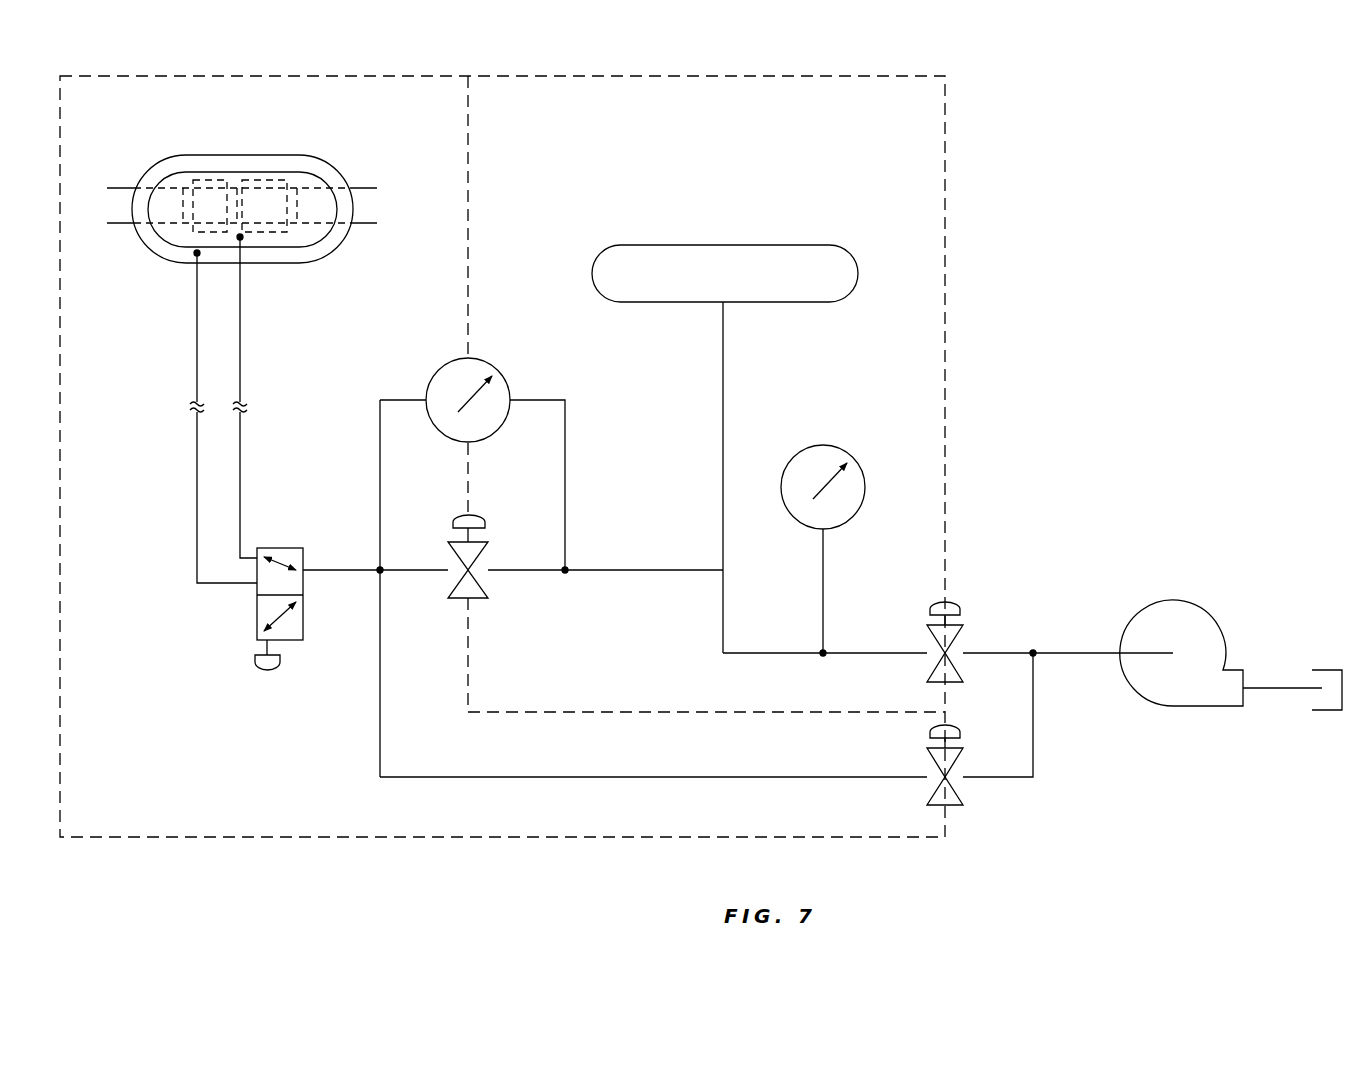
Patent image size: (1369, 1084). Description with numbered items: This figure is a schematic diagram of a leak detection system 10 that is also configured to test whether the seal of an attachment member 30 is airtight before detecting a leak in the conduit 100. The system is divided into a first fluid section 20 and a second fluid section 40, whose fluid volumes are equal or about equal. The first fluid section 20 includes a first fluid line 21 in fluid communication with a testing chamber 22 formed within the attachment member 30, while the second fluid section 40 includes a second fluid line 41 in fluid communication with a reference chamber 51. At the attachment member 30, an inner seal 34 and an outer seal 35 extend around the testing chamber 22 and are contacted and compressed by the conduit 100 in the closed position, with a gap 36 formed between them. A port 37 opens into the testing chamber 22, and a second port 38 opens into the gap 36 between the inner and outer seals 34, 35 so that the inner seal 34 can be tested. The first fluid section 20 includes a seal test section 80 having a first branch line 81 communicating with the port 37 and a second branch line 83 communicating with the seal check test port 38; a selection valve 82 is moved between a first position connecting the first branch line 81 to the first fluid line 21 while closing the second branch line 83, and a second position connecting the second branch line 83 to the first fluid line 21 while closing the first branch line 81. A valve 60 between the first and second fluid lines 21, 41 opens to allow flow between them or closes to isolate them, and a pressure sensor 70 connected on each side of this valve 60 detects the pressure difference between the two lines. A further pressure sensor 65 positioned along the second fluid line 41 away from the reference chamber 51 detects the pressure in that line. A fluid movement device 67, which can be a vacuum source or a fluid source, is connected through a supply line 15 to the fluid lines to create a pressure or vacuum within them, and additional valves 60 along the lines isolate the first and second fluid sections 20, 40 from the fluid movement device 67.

The leak detection system 10 is at (1000, 285).
The supply line 15 is at (1067, 652).
The first fluid section 20 is at (483, 800).
The first fluid line 21 is at (650, 778).
The testing chamber 22 is at (180, 182).
The attachment member 30 is at (147, 175).
The inner seal 34 is at (258, 172).
The outer seal 35 is at (342, 237).
The gap 36 is at (323, 246).
The port 37 is at (241, 240).
The second port 38 is at (196, 256).
The second fluid section 40 is at (908, 553).
The second fluid line 41 is at (873, 655).
The reference chamber 51 is at (778, 246).
The valve 60 is at (486, 585).
The pressure sensor 65 is at (841, 455).
The fluid movement device 67 is at (1197, 636).
The pressure sensor 70 is at (508, 387).
The seal test section 80 is at (160, 530).
The first branch line 81 is at (241, 360).
The selection valve 82 is at (305, 626).
The second branch line 83 is at (196, 372).
The conduit 100 is at (238, 200).